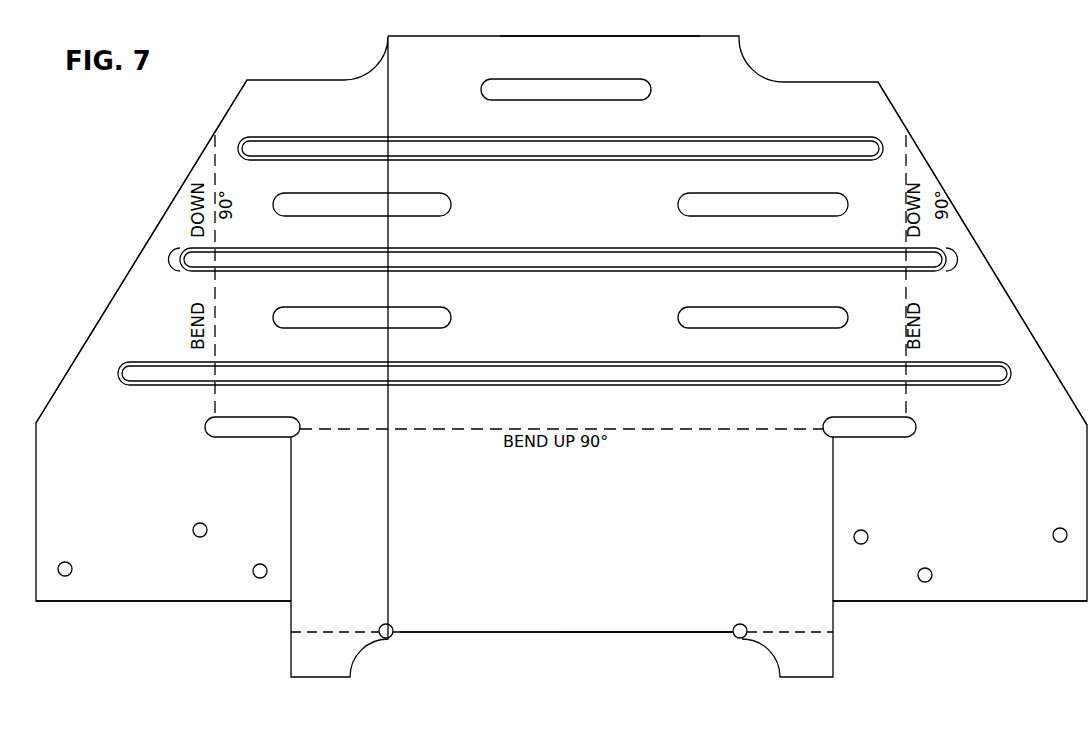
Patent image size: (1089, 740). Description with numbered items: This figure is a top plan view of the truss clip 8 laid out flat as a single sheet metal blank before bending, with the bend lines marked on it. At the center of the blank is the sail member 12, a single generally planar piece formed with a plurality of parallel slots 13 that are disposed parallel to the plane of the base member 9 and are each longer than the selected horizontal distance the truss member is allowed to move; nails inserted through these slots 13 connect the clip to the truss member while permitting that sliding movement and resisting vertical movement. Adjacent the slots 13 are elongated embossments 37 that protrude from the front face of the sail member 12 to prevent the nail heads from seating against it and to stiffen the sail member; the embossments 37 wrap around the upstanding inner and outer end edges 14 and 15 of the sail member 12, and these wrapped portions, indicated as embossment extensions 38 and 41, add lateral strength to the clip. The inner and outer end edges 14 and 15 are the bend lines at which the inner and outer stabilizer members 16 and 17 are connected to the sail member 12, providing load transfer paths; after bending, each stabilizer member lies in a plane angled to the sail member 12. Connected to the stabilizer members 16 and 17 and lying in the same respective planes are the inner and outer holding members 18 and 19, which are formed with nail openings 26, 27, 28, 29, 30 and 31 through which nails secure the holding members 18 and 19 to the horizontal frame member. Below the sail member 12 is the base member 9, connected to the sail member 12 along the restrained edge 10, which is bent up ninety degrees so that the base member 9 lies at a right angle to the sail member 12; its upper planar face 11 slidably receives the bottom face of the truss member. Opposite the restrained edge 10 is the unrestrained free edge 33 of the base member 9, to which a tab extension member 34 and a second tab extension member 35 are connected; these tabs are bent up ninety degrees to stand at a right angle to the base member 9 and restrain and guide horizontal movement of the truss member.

The truss clip 8 is at (463, 34).
The base member 9 is at (495, 607).
The restrained edge 10 is at (366, 430).
The upper planar face 11 is at (574, 527).
The sail member 12 is at (597, 35).
The parallel slots 13 is at (562, 80).
The inner end edge 14 is at (214, 166).
The outer end edge 15 is at (906, 165).
The inner stabilizer member 16 is at (112, 330).
The outer stabilizer member 17 is at (991, 323).
The inner holding member 18 is at (153, 601).
The outer holding member 19 is at (960, 604).
The nail opening 26 is at (868, 530).
The nail opening 27 is at (928, 568).
The nail opening 28 is at (1058, 528).
The nail opening 29 is at (68, 562).
The nail opening 30 is at (203, 523).
The nail opening 31 is at (259, 564).
The unrestrained free edge 33 is at (610, 635).
The tab extension member 34 is at (365, 668).
The second tab extension member 35 is at (768, 668).
The elongated embossments 37 is at (628, 149).
The embossment extension 38 is at (162, 366).
The embossment extension 41 is at (958, 375).